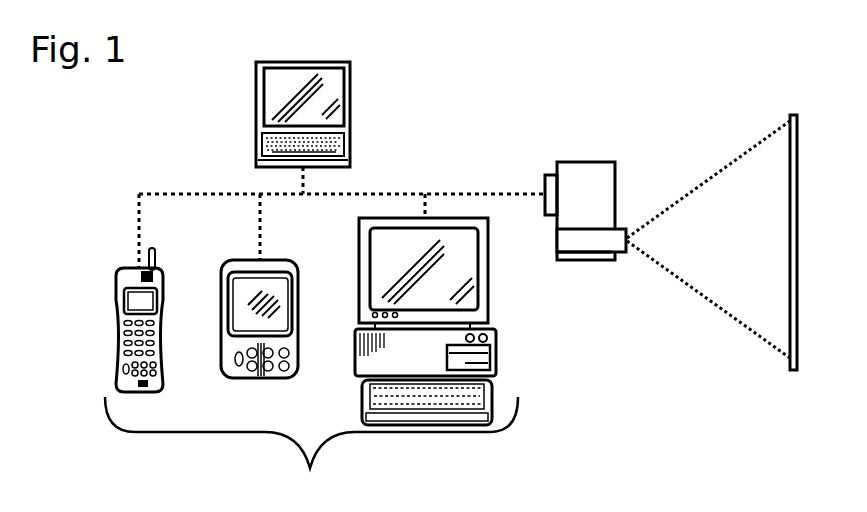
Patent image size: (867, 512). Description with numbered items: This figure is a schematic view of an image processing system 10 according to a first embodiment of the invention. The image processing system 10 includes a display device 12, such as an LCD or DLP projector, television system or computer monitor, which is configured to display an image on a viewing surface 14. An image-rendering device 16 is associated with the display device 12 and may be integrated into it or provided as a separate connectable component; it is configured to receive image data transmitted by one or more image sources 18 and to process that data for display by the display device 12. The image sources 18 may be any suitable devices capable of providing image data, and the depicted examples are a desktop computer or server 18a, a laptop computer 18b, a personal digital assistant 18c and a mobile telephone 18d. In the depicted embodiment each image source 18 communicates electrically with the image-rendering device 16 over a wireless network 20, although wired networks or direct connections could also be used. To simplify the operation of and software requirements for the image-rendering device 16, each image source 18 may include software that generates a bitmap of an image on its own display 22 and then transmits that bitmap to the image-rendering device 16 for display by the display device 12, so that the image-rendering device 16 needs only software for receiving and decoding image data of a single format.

The image processing system 10 is at (603, 78).
The display device 12 is at (594, 162).
The viewing surface 14 is at (798, 140).
The image-rendering device 16 is at (544, 182).
The image sources 18 is at (311, 446).
The desktop computer 18a is at (490, 278).
The laptop computer 18b is at (308, 64).
The personal digital assistant 18c is at (272, 259).
The mobile telephone 18d is at (130, 268).
The wireless network 20 is at (185, 193).
The display 22 is at (278, 70).